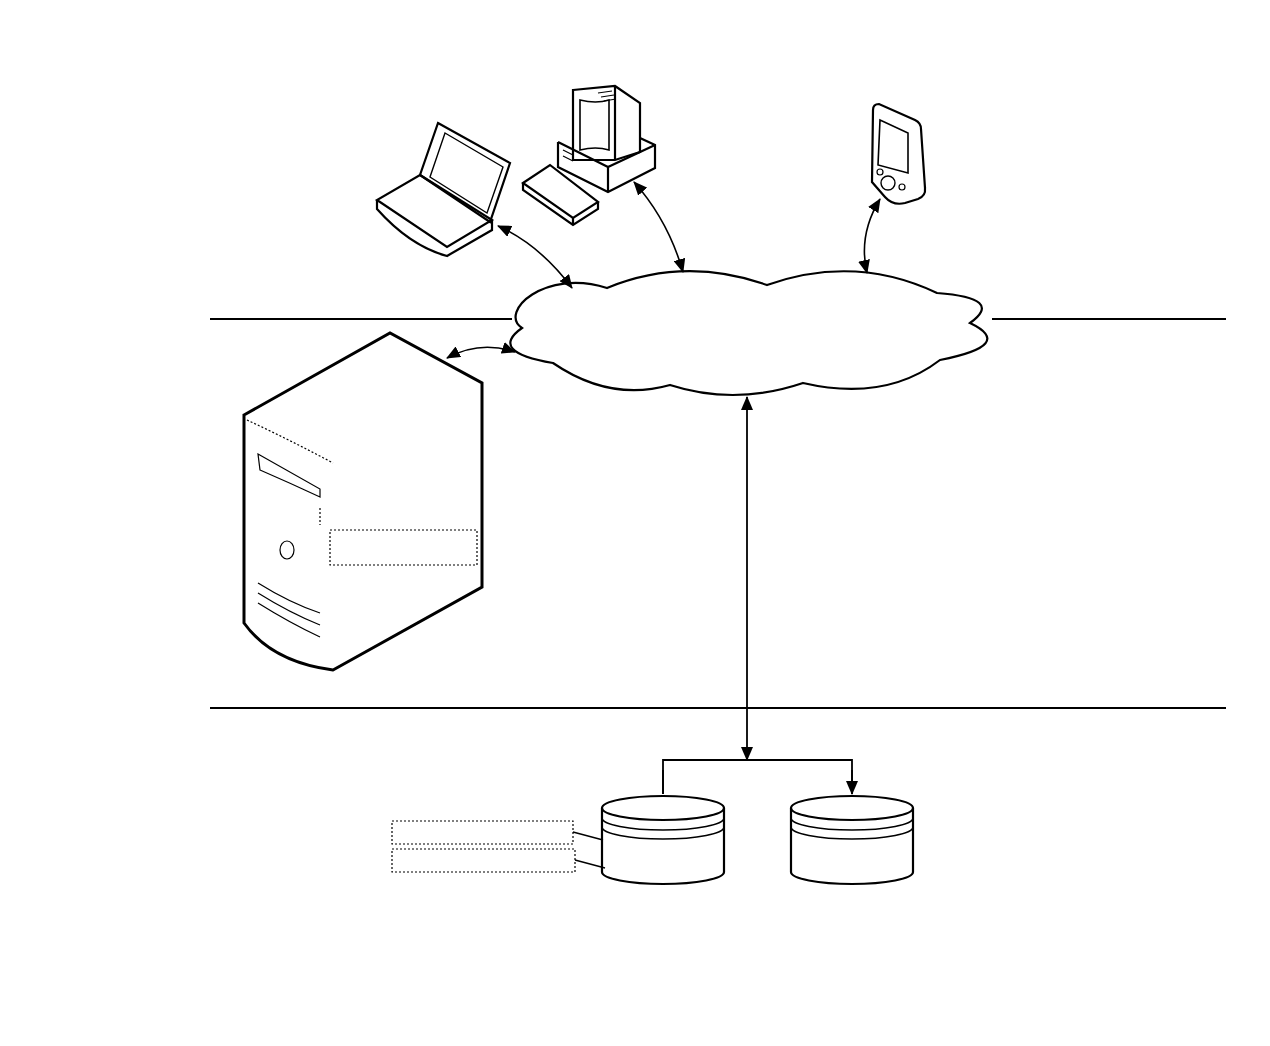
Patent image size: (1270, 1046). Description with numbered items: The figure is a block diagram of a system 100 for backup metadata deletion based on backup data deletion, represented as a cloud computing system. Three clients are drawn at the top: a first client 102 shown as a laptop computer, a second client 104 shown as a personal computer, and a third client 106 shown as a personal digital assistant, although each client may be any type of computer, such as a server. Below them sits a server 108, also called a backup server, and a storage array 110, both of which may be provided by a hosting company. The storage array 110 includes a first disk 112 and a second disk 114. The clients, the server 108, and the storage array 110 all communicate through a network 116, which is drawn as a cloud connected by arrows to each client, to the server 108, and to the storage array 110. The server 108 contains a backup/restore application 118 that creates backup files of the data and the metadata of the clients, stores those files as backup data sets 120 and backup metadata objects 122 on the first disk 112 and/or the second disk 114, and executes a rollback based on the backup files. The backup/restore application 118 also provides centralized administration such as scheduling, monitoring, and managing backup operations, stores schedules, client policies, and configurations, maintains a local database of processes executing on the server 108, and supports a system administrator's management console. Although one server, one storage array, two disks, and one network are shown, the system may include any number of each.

The system 100 is at (720, 100).
The first client 102 is at (440, 127).
The second client 104 is at (577, 87).
The third client 106 is at (893, 106).
The server 108 is at (245, 583).
The storage array 110 is at (806, 640).
The first disk 112 is at (618, 802).
The second disk 114 is at (800, 805).
The network 116 is at (748, 333).
The backup/restore application 118 is at (403, 547).
The backup data sets 120 is at (497, 832).
The backup metadata objects 122 is at (498, 860).